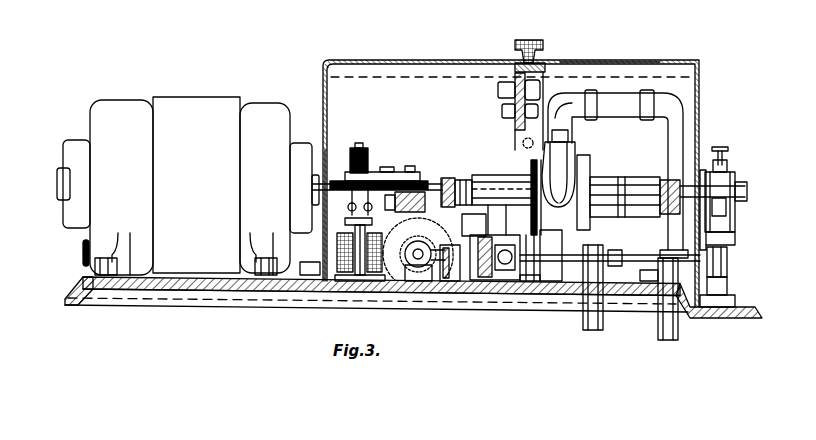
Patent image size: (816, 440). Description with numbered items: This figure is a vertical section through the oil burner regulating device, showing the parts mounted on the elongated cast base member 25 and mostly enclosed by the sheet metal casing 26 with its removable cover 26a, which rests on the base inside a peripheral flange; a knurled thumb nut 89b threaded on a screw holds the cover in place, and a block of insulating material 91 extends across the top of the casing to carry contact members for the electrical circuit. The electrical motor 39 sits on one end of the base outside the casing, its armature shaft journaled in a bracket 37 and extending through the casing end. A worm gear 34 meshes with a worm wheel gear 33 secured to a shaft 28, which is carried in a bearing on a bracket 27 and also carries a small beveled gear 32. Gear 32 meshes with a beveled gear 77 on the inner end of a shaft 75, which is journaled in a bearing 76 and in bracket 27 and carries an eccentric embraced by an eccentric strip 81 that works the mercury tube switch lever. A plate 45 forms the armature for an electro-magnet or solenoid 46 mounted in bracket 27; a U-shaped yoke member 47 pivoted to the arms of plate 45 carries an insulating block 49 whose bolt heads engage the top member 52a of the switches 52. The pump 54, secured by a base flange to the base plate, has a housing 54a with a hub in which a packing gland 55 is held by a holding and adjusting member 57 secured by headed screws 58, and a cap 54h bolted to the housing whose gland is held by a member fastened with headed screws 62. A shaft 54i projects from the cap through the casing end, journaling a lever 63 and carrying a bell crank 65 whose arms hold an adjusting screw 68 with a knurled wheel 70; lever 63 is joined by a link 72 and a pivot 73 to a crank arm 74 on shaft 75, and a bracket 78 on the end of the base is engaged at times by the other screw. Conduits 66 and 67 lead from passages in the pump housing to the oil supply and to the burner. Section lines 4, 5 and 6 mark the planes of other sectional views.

The base member 25 is at (762, 312).
The sheet metal casing 26 is at (702, 80).
The removable cover 26a is at (668, 63).
The bracket 27 is at (478, 262).
The shaft 28 is at (420, 268).
The small beveled gear 32 is at (418, 249).
The worm wheel gear 33 is at (484, 220).
The worm gear 34 is at (412, 180).
The bracket 37 is at (324, 150).
The electrical motor 39 is at (118, 100).
The plate 45 is at (340, 276).
The electro-magnet or solenoid 46 is at (371, 269).
The U-shaped yoke member 47 is at (355, 151).
The insulating block 49 is at (372, 168).
The switches 52 is at (404, 172).
The switch top member 52a is at (382, 165).
The pump 54 is at (565, 160).
The pump housing 54a is at (530, 168).
The cap 54h is at (628, 178).
The shaft 54i is at (752, 192).
The packing gland 55 is at (467, 180).
The holding and adjusting member 57 is at (448, 178).
The headed screws 58 is at (457, 181).
The headed screws 62 is at (668, 220).
The lever 63 is at (728, 214).
The bell crank 65 is at (735, 180).
The conduit 66 is at (600, 320).
The discharge conduit 67 is at (680, 322).
The screw 68 is at (727, 162).
The adjusting knurled wheel 70 is at (724, 150).
The link 72 is at (728, 232).
The pivot 73 is at (735, 246).
The crank arm 74 is at (738, 263).
The shaft 75 is at (632, 256).
The bearing 76 is at (652, 283).
The beveled gear 77 is at (443, 279).
The bracket 78 is at (730, 291).
The eccentric strip 81 is at (512, 270).
The knurled thumb nut 89b is at (545, 47).
The insulating block 91 is at (516, 125).
The section line 4- 4 is at (441, 185).
The section line 5- 5 is at (487, 45).
The section line 6- 6 is at (752, 135).